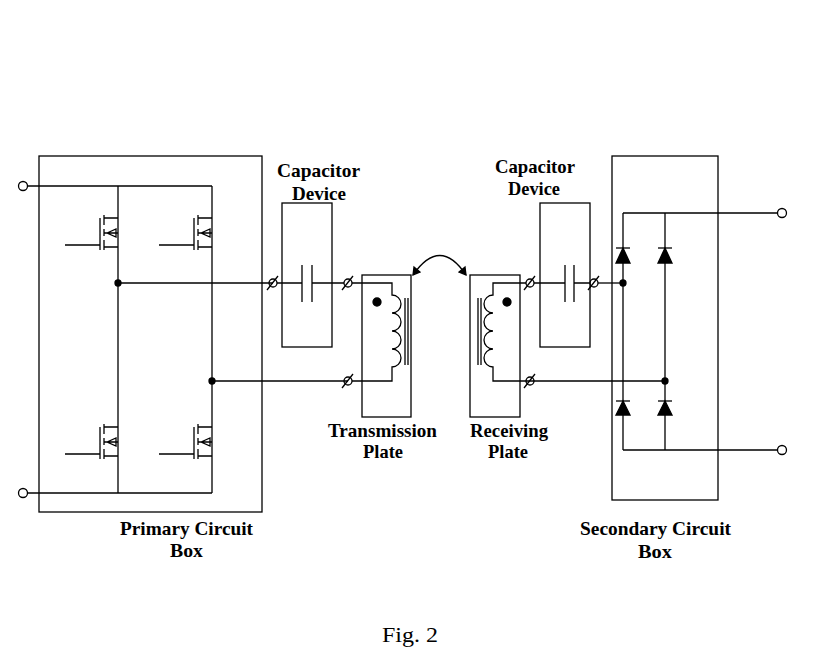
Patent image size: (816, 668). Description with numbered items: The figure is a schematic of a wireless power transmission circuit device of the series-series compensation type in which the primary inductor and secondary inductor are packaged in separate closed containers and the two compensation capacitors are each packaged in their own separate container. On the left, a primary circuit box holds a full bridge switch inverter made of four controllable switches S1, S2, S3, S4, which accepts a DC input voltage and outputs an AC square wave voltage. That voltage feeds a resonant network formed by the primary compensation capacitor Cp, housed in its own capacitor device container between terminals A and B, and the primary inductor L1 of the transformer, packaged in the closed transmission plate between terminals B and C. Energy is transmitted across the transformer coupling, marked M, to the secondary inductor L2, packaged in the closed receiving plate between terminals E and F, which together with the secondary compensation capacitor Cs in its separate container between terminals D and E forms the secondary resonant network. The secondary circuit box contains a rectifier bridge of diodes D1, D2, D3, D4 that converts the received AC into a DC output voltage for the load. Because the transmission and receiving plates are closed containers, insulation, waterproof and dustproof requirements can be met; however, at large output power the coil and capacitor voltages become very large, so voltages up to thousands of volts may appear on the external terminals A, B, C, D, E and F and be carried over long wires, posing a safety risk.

The switch S1 is at (106, 223).
The switch S2 is at (201, 223).
The switch S3 is at (106, 435).
The switch S4 is at (200, 435).
The primary compensation capacitor Cp is at (310, 266).
The secondary compensation capacitor Cs is at (562, 266).
The primary inductor L1 is at (380, 332).
The secondary inductor L2 is at (571, 332).
The mutual inductance M is at (439, 256).
The diode D1 is at (634, 245).
The diode D2 is at (678, 245).
The diode D3 is at (634, 423).
The diode D4 is at (679, 423).
The terminal A is at (273, 274).
The terminal B is at (350, 274).
The terminal C is at (346, 371).
The terminal D is at (597, 274).
The terminal E is at (530, 274).
The terminal F is at (529, 371).